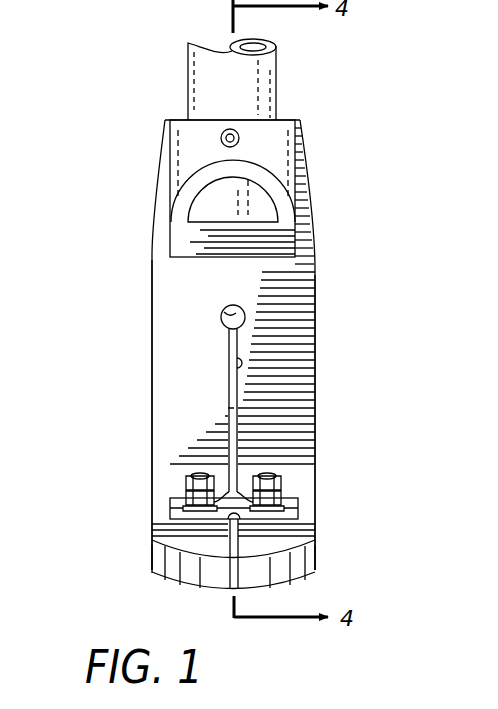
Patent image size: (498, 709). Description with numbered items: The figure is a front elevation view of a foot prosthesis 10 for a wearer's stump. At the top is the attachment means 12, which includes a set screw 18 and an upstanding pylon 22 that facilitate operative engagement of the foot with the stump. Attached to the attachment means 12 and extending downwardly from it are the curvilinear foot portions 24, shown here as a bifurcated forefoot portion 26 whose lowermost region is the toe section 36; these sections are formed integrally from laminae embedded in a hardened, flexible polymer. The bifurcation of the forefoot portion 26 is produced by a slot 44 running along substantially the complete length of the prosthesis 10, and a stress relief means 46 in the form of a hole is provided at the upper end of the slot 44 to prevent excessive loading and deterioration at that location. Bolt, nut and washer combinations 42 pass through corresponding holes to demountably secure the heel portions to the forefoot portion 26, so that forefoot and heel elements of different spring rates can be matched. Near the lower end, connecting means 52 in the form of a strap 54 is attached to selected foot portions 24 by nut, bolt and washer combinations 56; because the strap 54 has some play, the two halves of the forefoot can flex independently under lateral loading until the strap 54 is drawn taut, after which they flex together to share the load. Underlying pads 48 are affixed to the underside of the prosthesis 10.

The foot prosthesis 10 is at (128, 333).
The attachment means 12 is at (312, 165).
The set screw 18 is at (224, 146).
The pylon 22 is at (278, 86).
The curvilinear foot portions 24 is at (148, 418).
The forefoot portion 26 is at (318, 340).
The toe section 36 is at (202, 538).
The bolt, nut and washer combinations 42 is at (198, 476).
The slot 44 is at (236, 358).
The stress relief means 46 is at (226, 312).
The pads 48 is at (215, 578).
The connecting means 52 is at (322, 508).
The strap 54 is at (172, 507).
The nut, bolt and washer combinations 56 is at (186, 496).